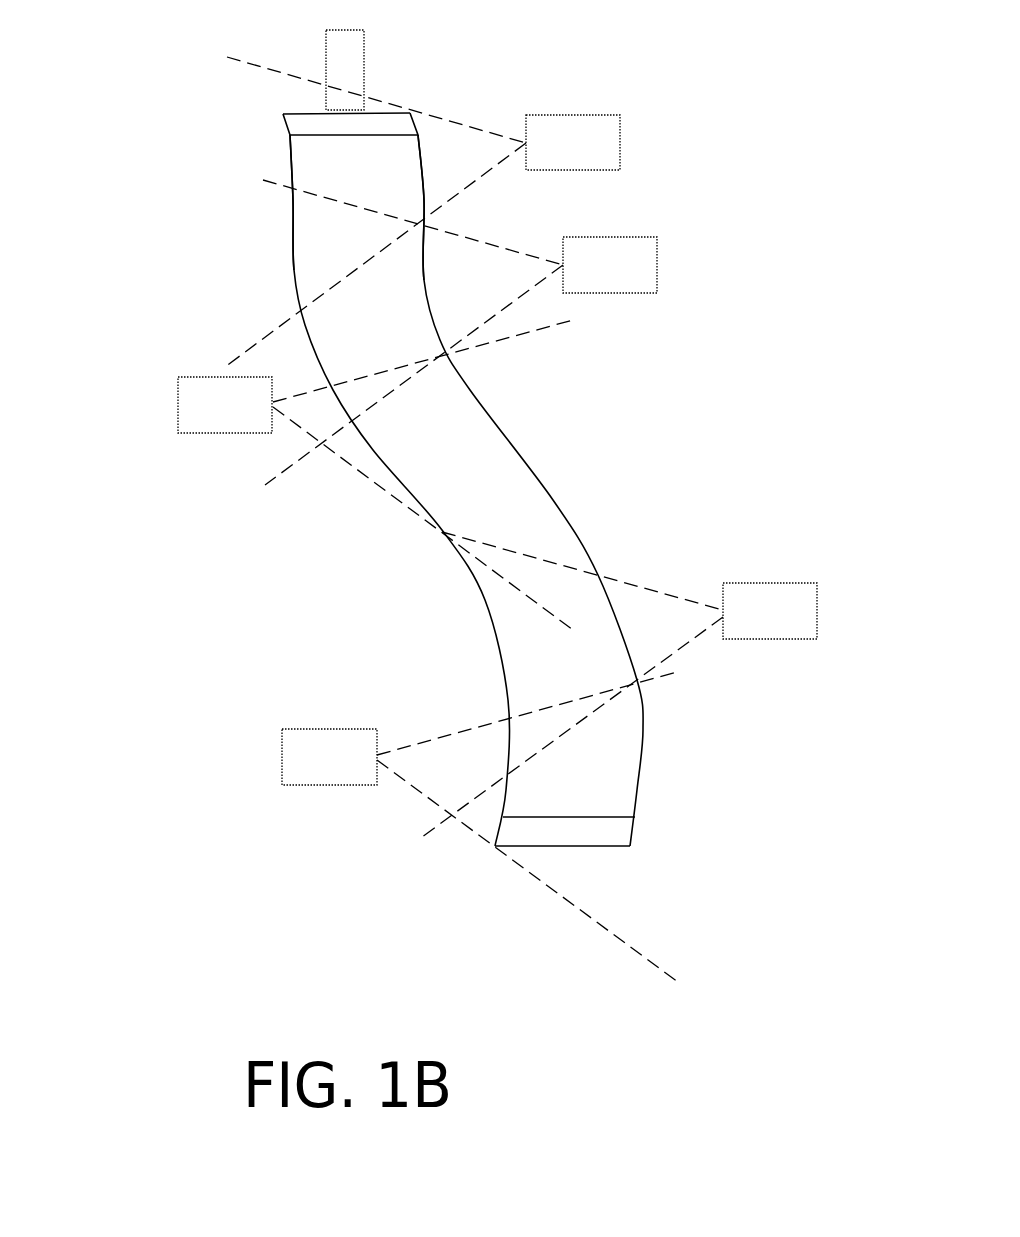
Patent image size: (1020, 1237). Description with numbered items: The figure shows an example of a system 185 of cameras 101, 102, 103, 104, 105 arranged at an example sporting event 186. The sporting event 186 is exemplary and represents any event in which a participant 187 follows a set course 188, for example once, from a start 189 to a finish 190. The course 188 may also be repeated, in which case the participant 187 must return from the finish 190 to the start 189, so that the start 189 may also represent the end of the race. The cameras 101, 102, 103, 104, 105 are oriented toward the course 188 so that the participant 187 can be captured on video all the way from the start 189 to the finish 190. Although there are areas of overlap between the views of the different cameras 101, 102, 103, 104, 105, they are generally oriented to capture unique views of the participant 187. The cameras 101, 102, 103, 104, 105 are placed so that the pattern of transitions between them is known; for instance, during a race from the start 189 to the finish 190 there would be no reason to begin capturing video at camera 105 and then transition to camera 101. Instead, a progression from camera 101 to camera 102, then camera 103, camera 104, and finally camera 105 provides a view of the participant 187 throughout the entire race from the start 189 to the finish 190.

The system of cameras 185 is at (168, 92).
The sporting event 186 is at (291, 159).
The participant 187 is at (363, 72).
The course 188 is at (293, 240).
The start 189 is at (413, 110).
The finish 190 is at (635, 817).
The camera 101 is at (422, 212).
The camera 102 is at (460, 332).
The camera 103 is at (375, 475).
The camera 104 is at (619, 684).
The camera 105 is at (480, 827).